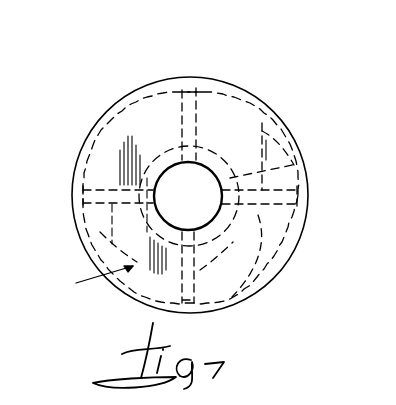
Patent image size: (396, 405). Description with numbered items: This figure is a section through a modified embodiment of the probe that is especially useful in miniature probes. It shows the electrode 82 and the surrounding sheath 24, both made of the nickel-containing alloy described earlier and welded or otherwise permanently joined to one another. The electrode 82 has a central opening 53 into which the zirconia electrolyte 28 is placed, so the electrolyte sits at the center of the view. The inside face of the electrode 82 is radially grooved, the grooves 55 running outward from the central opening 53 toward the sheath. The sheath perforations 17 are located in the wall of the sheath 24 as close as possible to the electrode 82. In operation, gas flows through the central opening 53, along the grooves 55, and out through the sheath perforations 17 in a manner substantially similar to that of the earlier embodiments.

The sheath perforations 17 is at (212, 82).
The sheath 24 is at (95, 249).
The zirconia electrolyte 28 is at (308, 166).
The central opening 53 is at (207, 176).
The grooves 55 is at (222, 248).
The electrode 82 is at (86, 280).